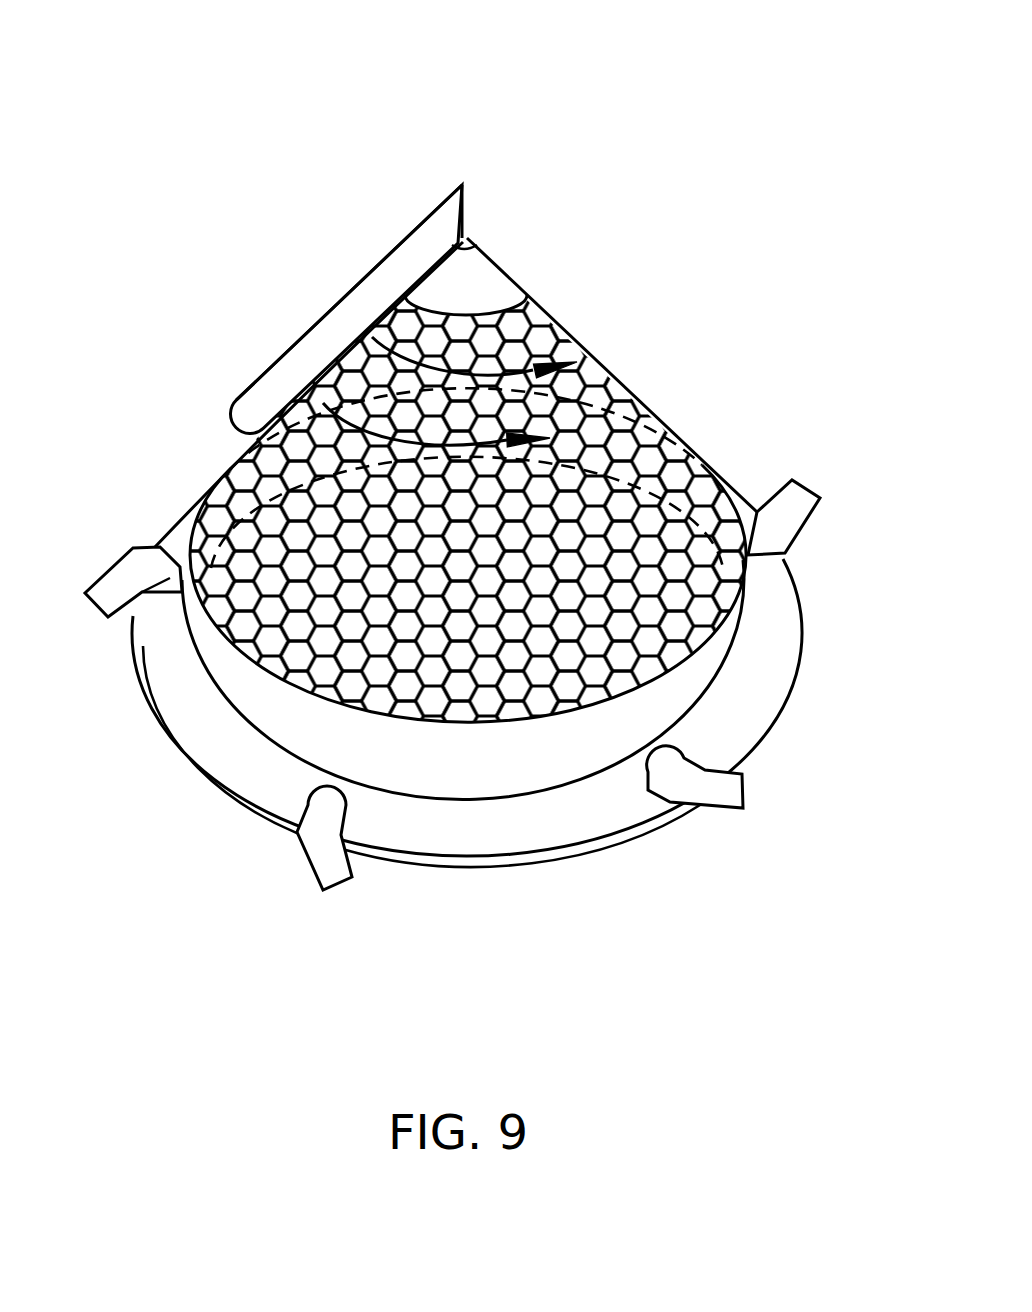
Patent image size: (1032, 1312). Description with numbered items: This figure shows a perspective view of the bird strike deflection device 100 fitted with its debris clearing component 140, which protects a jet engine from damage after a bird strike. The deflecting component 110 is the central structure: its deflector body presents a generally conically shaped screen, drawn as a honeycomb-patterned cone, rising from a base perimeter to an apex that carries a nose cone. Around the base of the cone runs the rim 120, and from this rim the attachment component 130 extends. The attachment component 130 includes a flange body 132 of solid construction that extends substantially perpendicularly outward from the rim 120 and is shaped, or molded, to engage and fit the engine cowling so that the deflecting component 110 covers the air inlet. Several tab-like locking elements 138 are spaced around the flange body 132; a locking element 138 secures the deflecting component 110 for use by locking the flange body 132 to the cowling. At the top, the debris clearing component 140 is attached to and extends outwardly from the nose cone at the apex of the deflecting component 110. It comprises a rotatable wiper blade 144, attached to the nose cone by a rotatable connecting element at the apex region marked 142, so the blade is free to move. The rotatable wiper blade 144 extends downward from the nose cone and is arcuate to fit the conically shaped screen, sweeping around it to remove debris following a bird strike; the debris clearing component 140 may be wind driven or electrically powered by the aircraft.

The bird strike deflection device 100 is at (474, 562).
The deflecting component 110 is at (727, 382).
The rim 120 is at (515, 762).
The attachment component 130 is at (524, 840).
The flange body 132 is at (600, 805).
The locking element 138 is at (140, 600).
The debris clearing component 140 is at (302, 274).
The apex tip 142 is at (468, 232).
The rotatable wiper blade 144 is at (418, 245).